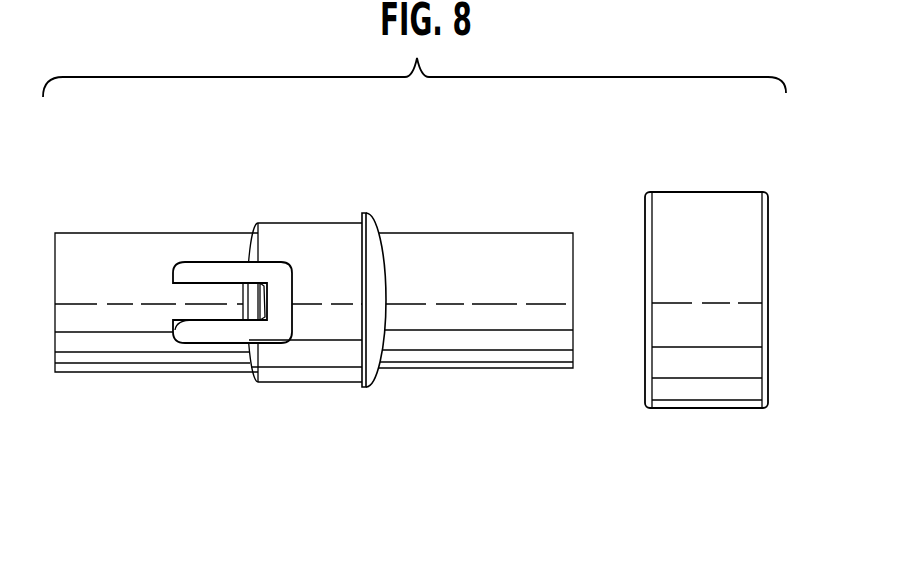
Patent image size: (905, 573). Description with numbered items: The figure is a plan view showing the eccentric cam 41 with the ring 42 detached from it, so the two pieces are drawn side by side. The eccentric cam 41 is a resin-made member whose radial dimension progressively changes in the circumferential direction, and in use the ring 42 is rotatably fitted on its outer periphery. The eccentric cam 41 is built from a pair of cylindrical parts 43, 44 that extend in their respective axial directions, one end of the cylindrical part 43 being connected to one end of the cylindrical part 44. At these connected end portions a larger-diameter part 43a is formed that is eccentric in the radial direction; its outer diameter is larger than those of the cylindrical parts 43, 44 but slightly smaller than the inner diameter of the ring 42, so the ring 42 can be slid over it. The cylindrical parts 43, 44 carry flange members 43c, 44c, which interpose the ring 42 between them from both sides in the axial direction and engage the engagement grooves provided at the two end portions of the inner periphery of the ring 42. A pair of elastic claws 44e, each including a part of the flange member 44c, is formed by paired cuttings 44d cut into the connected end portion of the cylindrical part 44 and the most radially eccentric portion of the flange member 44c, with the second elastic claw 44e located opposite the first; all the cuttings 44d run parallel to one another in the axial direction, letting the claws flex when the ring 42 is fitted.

The eccentric cam 41 is at (452, 208).
The ring 42 is at (705, 200).
The cylindrical part 43 is at (527, 240).
The larger-diameter part 43a is at (325, 230).
The flange member 43c is at (365, 390).
The cylindrical part 44 is at (103, 239).
The flange member 44c is at (255, 300).
The cuttings 44d is at (193, 283).
The elastic claw 44e is at (223, 300).